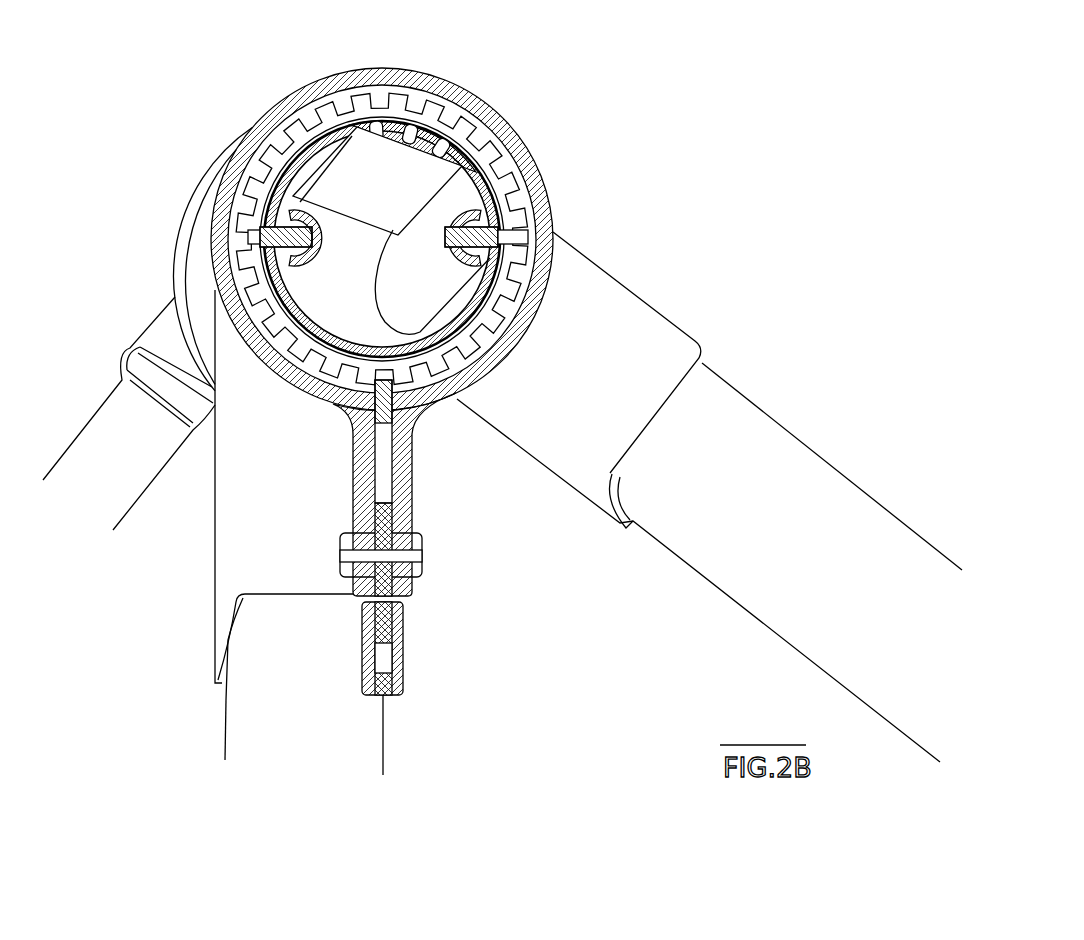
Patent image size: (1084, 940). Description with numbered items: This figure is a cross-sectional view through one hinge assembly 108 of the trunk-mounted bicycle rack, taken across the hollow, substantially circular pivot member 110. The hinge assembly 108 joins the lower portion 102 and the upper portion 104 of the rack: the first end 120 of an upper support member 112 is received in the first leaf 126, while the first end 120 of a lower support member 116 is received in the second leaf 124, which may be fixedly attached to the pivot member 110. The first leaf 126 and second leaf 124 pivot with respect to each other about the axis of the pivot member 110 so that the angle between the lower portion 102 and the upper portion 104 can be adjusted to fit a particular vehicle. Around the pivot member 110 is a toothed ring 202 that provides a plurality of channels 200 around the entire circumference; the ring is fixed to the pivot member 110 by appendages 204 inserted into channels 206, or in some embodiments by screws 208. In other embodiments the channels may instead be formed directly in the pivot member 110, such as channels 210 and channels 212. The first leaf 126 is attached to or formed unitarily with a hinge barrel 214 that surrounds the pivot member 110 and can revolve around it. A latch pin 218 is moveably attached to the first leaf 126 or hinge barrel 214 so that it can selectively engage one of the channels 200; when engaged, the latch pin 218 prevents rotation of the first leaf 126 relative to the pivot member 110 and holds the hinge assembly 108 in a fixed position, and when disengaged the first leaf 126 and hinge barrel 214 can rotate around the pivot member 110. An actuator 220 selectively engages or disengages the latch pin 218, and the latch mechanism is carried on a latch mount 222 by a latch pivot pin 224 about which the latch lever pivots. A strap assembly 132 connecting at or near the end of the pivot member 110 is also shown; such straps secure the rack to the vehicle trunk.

The lower portion 102 is at (762, 398).
The upper portion 104 is at (218, 738).
The hinge assembly 108 is at (530, 95).
The pivot member 110 is at (514, 137).
The upper support member 112 is at (226, 712).
The lower support member 116 is at (797, 431).
The first end 120 is at (677, 432).
The second leaf 124 is at (598, 336).
The first leaf 126 is at (247, 542).
The strap assembly 132 is at (151, 330).
The channels 200 is at (306, 116).
The toothed ring 202 is at (268, 127).
The appendages 204 is at (528, 233).
The channels 206 is at (232, 176).
The screws 208 is at (268, 208).
The channels 210 is at (440, 145).
The channels 212 is at (468, 290).
The hinge barrel 214 is at (372, 138).
The latch pin 218 is at (400, 447).
The actuator 220 is at (401, 647).
The latch mount 222 is at (402, 512).
The latch pivot pin 224 is at (419, 555).